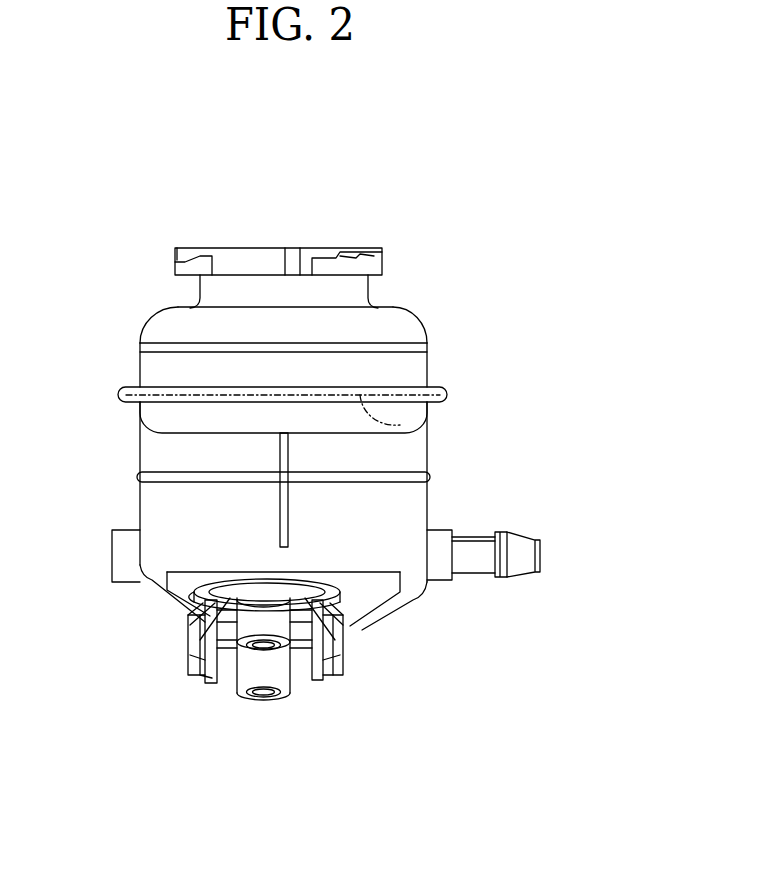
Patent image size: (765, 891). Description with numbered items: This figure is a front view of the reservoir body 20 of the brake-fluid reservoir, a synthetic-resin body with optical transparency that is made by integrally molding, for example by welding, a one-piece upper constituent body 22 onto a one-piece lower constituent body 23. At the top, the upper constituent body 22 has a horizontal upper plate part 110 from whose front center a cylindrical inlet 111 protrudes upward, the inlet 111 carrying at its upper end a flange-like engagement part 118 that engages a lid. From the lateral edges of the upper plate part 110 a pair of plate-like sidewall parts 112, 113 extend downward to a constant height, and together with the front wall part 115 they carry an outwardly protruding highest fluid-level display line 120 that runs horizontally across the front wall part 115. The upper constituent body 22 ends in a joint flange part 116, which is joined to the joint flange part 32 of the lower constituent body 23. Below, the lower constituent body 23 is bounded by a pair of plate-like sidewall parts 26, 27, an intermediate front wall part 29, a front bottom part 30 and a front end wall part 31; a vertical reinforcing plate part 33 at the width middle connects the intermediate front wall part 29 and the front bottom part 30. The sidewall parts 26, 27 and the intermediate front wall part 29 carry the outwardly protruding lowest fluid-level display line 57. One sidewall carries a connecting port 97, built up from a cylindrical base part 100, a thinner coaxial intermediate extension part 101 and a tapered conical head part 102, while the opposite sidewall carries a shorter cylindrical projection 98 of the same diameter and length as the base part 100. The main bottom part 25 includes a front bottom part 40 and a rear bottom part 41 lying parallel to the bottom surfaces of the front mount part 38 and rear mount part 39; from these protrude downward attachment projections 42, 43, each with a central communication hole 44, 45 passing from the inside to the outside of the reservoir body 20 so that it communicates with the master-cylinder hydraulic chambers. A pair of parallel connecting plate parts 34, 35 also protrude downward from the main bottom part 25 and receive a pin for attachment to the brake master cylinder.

The reservoir body 20 is at (517, 308).
The upper constituent body 22 is at (430, 367).
The lower constituent body 23 is at (433, 415).
The main bottom part 25 is at (372, 592).
The sidewall part 26 is at (427, 443).
The sidewall part 27 is at (140, 442).
The intermediate front wall part 29 is at (155, 505).
The front bottom part 30 is at (180, 434).
The front end wall part 31 is at (175, 416).
The joint flange part 32 is at (130, 392).
The reinforcing plate part 33 is at (290, 510).
The connecting plate part 34 is at (317, 677).
The connecting plate part 35 is at (212, 678).
The front mount part 38 is at (217, 600).
The rear mount part 39 is at (228, 657).
The front bottom part 40 is at (223, 645).
The rear bottom part 41 is at (228, 657).
The attachment projection 42 is at (282, 625).
The attachment projection 43 is at (325, 670).
The communication hole 44 is at (260, 650).
The communication hole 45 is at (267, 695).
The lowest fluid-level display line 57 is at (407, 472).
The connecting port 97 is at (545, 552).
The projection 98 is at (120, 548).
The base part 100 is at (440, 530).
The intermediate extension part 101 is at (485, 563).
The head part 102 is at (522, 567).
The upper plate part 110 is at (246, 312).
The inlet 111 is at (298, 285).
The sidewall part 112 is at (428, 356).
The sidewall part 113 is at (140, 362).
The front wall part 115 is at (340, 325).
The joint flange part 116 is at (400, 425).
The engagement part 118 is at (378, 258).
The highest fluid-level display line 120 is at (182, 347).